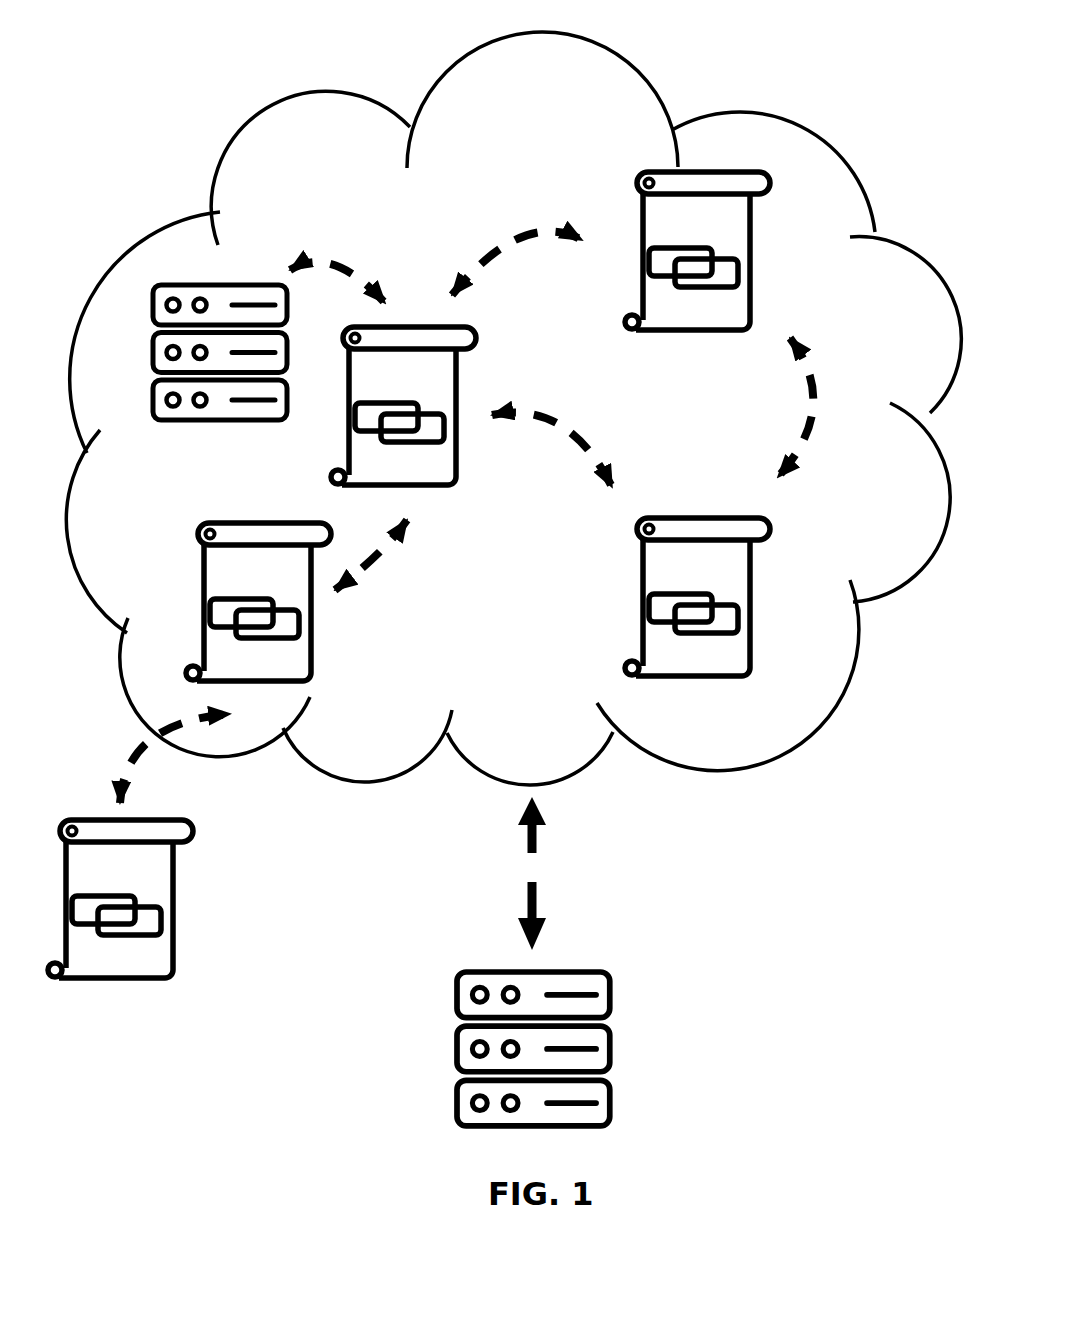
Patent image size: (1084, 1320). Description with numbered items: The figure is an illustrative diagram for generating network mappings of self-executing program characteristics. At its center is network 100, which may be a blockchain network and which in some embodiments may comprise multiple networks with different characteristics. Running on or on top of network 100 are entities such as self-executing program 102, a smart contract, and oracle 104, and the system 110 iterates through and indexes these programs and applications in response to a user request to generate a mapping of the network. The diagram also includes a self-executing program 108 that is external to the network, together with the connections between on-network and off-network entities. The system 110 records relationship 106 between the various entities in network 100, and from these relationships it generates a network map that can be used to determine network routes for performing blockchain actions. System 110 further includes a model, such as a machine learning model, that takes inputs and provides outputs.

The network 100 is at (534, 182).
The self-executing program 102 is at (293, 664).
The oracle 104 is at (137, 383).
The relationship 106 is at (596, 439).
The self-executing program external to the network 108 is at (102, 957).
The system 110 is at (622, 1023).